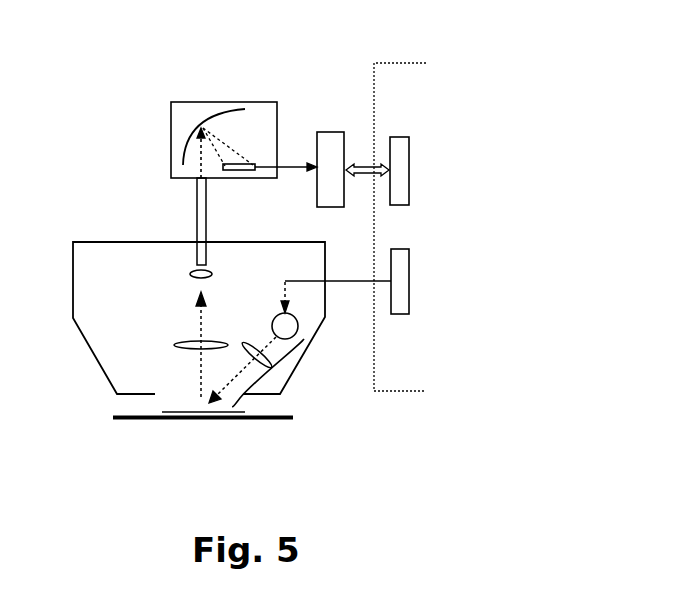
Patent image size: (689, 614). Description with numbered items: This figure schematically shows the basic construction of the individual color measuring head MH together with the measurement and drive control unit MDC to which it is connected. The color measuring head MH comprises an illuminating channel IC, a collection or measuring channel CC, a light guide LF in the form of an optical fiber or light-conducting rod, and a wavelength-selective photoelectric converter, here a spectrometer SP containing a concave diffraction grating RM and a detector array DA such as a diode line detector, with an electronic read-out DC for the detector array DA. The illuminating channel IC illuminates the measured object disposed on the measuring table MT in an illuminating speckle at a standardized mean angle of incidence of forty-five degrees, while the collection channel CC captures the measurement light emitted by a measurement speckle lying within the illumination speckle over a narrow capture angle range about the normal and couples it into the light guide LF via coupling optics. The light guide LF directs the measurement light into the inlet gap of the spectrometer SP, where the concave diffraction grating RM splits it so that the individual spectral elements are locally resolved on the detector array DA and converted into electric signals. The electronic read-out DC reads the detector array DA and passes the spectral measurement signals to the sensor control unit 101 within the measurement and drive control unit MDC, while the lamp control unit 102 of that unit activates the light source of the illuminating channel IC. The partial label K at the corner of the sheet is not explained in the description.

The camera K is at (7, 13).
The spectrometer SP is at (180, 118).
The concave diffraction grating RM is at (216, 112).
The detector array DA is at (245, 171).
The electronic read-out DC is at (332, 133).
The measurement and drive control unit MDC is at (374, 74).
The sensor control unit 101 is at (410, 147).
The lamp control unit 102 is at (410, 290).
The light guide LF is at (197, 200).
The color measuring head MH is at (88, 268).
The collection channel CC is at (175, 268).
The illuminating channel IC is at (275, 377).
The measuring table MT is at (150, 420).